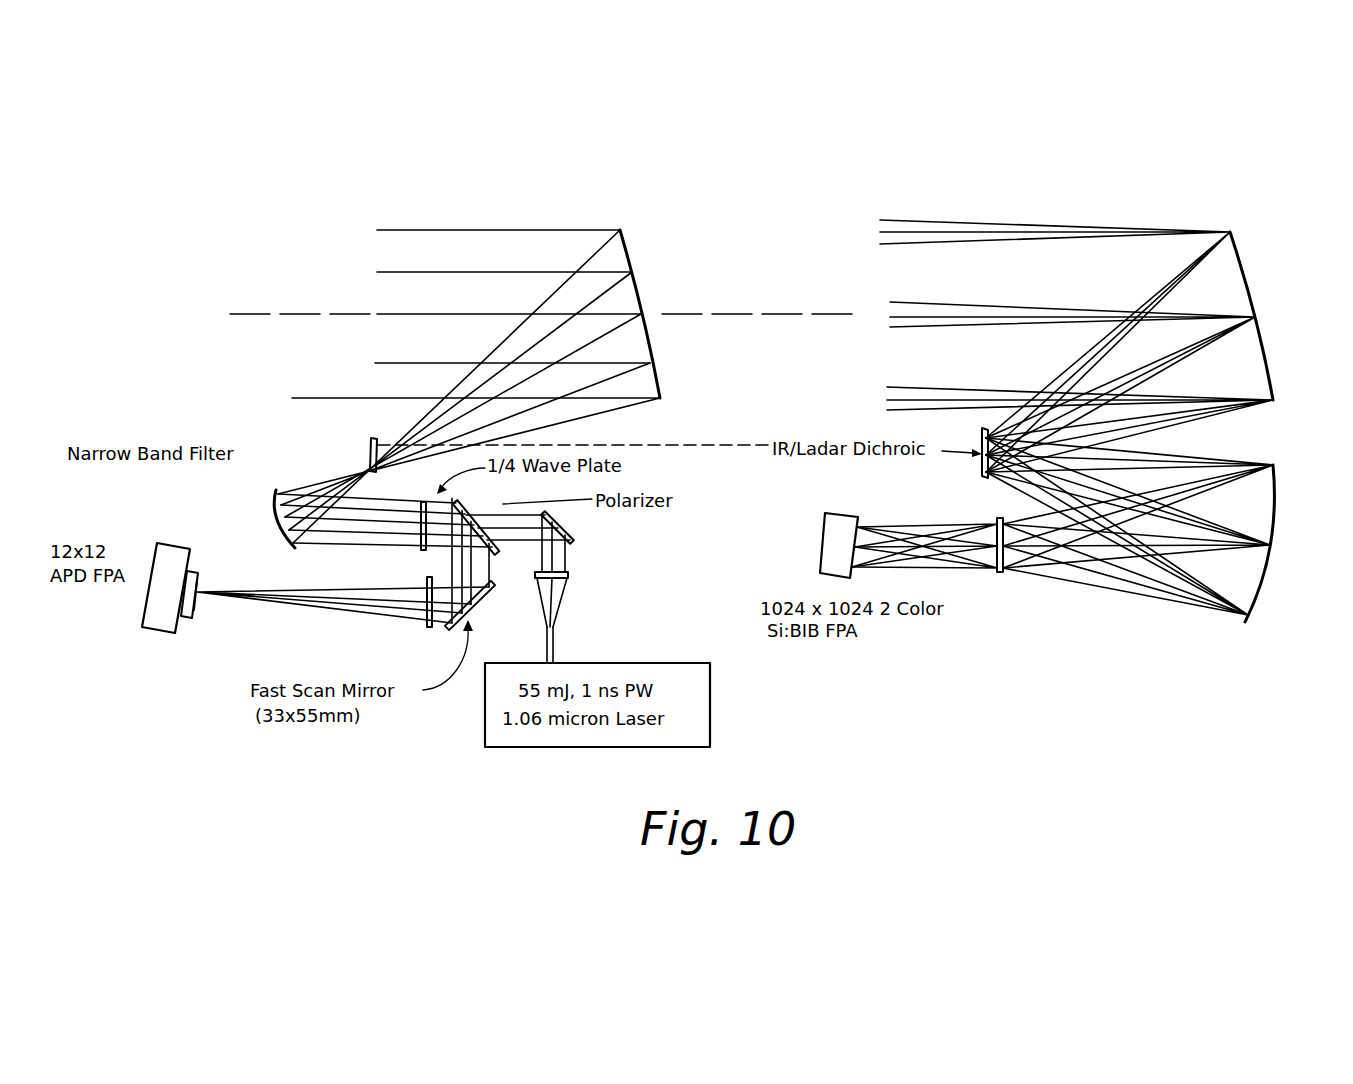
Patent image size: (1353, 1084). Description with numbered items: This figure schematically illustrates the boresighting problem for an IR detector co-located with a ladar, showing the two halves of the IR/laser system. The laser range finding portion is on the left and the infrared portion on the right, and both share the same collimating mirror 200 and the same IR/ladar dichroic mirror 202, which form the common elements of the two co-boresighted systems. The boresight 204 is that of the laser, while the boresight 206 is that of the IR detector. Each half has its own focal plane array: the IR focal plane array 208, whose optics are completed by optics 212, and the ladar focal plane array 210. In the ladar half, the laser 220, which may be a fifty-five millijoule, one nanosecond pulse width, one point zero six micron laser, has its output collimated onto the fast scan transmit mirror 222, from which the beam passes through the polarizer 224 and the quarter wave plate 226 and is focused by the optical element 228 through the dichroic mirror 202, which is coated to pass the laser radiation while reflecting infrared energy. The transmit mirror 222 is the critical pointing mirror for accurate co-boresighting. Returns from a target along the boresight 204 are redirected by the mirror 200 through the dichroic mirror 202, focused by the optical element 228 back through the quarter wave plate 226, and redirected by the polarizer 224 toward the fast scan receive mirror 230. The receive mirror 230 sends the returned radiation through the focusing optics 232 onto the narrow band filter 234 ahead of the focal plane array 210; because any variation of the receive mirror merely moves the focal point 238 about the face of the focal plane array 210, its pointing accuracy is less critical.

The collimating mirror 200 is at (641, 294).
The IR/ladar dichroic mirror 202 is at (371, 445).
The boresight 204 is at (470, 313).
The boresight 206 is at (968, 303).
The IR focal plane array 208 is at (824, 530).
The ladar focal plane array 210 is at (150, 634).
The optics 212 is at (1000, 575).
The laser 220 is at (563, 579).
The fast scan transmit mirror 222 is at (582, 537).
The polarizer 224 is at (484, 505).
The quarter wave plate 226 is at (421, 547).
The optical element 228 is at (278, 503).
The fast scan receive mirror 230 is at (451, 630).
The focusing optics 232 is at (425, 620).
The narrow band filter 234 is at (196, 607).
The focal point 238 is at (200, 588).